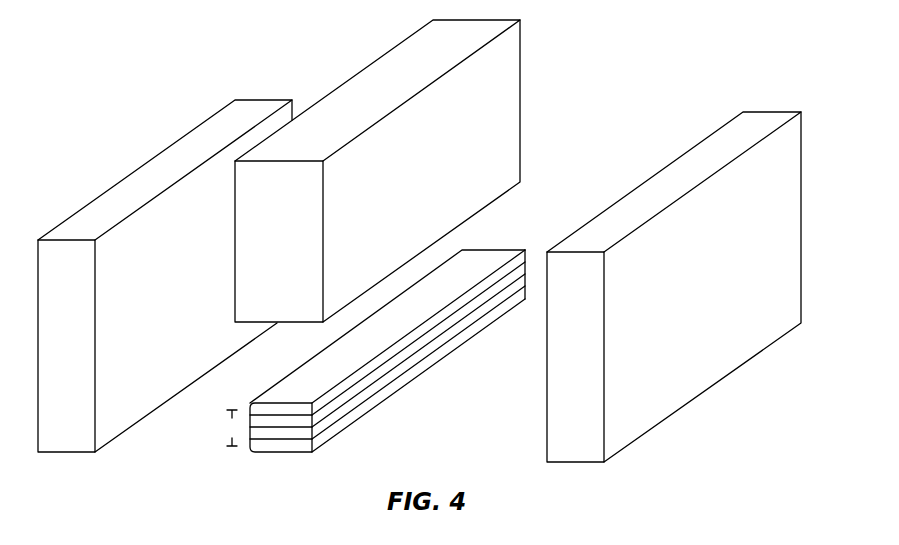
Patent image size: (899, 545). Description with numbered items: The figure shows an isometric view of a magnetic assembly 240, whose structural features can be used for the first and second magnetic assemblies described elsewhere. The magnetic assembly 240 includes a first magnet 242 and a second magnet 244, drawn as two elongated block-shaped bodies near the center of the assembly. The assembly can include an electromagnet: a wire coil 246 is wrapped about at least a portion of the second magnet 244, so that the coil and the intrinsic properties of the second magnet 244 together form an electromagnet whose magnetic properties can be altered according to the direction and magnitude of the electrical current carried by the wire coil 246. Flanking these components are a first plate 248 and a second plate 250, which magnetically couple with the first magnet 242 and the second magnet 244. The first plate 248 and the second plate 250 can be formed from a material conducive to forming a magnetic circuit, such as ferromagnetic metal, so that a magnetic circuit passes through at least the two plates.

The magnetic assembly 240 is at (93, 63).
The first magnet 242 is at (521, 108).
The second magnet 244 is at (525, 250).
The wire coil 246 is at (407, 397).
The first plate 248 is at (128, 432).
The second plate 250 is at (690, 407).